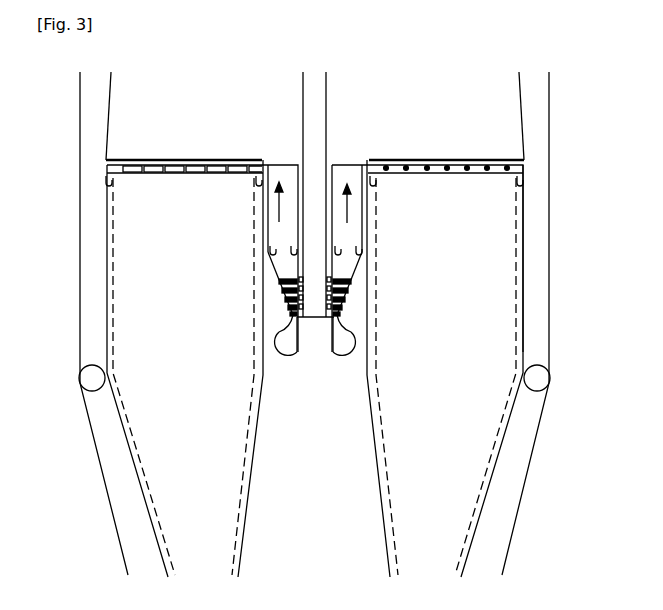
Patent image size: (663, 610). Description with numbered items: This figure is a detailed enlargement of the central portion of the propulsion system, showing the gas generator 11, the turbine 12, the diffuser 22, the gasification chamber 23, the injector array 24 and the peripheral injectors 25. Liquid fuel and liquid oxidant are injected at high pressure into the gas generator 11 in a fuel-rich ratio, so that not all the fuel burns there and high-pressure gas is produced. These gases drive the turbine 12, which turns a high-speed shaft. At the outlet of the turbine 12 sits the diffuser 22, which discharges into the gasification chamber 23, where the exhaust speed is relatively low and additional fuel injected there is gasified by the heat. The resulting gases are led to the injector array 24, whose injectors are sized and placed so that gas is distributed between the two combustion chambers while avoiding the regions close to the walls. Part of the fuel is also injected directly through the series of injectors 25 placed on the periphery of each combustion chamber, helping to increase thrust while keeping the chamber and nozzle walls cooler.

The gas generator 11 is at (286, 344).
The turbine 12 is at (348, 295).
The diffuser 22 is at (283, 265).
The gasification chamber 23 is at (275, 222).
The injector array 24 is at (386, 168).
The injectors 25 is at (373, 181).